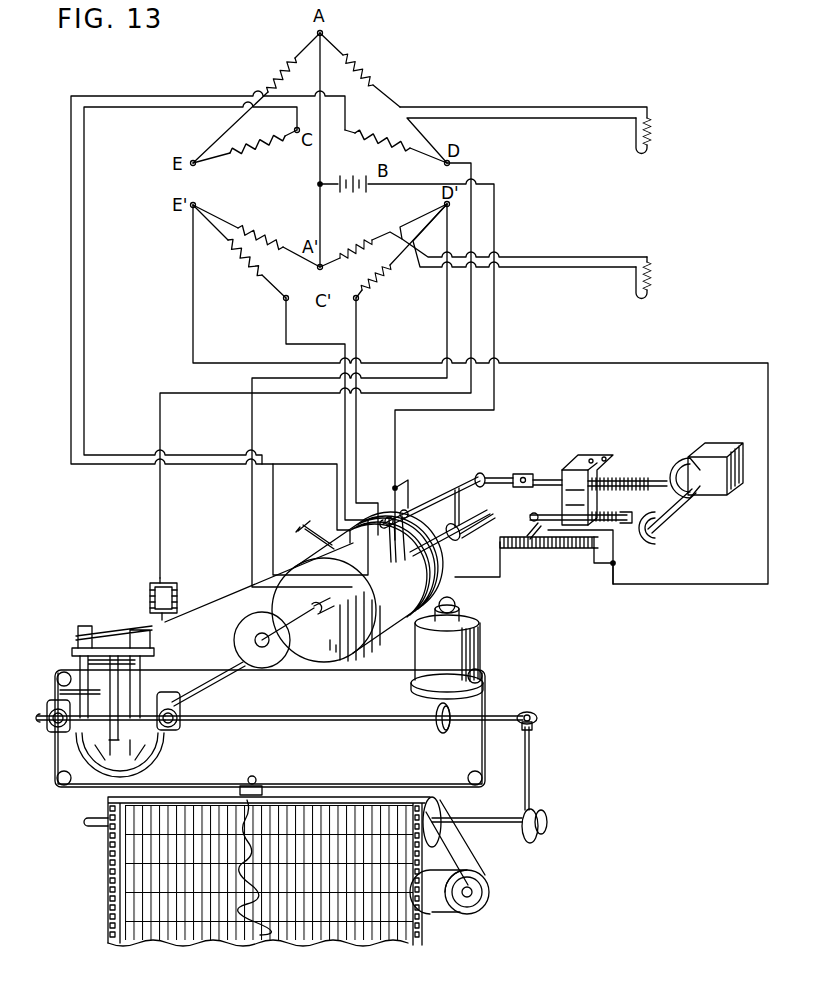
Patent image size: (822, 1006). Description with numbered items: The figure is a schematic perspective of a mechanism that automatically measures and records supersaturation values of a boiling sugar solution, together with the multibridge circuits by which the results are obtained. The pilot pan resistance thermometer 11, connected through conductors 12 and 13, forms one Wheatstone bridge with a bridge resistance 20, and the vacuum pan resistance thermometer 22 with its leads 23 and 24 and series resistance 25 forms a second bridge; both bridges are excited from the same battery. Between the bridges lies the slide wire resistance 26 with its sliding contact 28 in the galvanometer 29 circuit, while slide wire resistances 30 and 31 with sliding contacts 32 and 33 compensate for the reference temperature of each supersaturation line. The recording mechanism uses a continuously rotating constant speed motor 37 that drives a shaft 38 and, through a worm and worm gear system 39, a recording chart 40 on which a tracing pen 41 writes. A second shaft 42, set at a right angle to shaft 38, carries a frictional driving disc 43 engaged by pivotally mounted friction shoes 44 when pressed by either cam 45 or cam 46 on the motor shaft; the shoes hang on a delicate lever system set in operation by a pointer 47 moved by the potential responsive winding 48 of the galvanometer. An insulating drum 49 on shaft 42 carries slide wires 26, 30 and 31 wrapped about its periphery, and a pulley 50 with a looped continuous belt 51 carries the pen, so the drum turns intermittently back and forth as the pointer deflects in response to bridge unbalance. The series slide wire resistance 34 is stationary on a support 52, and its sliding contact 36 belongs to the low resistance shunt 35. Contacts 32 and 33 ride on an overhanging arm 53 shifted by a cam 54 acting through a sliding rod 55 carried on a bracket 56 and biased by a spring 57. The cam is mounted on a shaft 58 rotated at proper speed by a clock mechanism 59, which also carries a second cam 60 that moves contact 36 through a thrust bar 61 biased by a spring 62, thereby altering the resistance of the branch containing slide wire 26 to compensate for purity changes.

The resistance thermometer 11 is at (657, 127).
The conductor 12 is at (511, 121).
The conductor 13 is at (513, 107).
The bridge resistance 20 is at (368, 79).
The resistance thermometer 22 is at (657, 277).
The lead 23 is at (559, 257).
The lead 24 is at (558, 269).
The resistance 25 is at (370, 242).
The slide wire resistance 26 is at (356, 598).
The sliding contact 28 is at (330, 540).
The galvanometer 29 is at (178, 574).
The slide wire resistance 30 is at (420, 572).
The slide wire resistance 31 is at (424, 592).
The sliding contact 32 is at (408, 540).
The sliding contact 33 is at (412, 525).
The slide wire resistance 34 is at (514, 549).
The low resistance shunt 35 is at (618, 546).
The sliding contact 36 is at (530, 534).
The constant speed motor 37 is at (479, 648).
The shaft 38 is at (360, 716).
The worm and worm gear system 39 is at (533, 772).
The recording chart 40 is at (220, 925).
The tracing pen 41 is at (262, 786).
The second shaft 42 is at (242, 664).
The frictional driving disc 43 is at (150, 757).
The friction shoes 44 is at (175, 736).
The cam 45 is at (182, 704).
The cam 46 is at (60, 700).
The pointer 47 is at (112, 642).
The potential responsive winding 48 is at (148, 598).
The insulating drum 49 is at (348, 651).
The pulley 50 is at (259, 628).
The continuous belt 51 is at (308, 678).
The support 52 is at (611, 565).
The overhanging arm 53 is at (455, 495).
The cam 54 is at (684, 462).
The sliding rod 55 is at (549, 478).
The bracket 56 is at (573, 494).
The spring 57 is at (613, 480).
The shaft 58 is at (680, 513).
The clock mechanism 59 is at (715, 452).
The cam 60 is at (661, 533).
The thrust bar 61 is at (625, 519).
The spring 62 is at (600, 509).